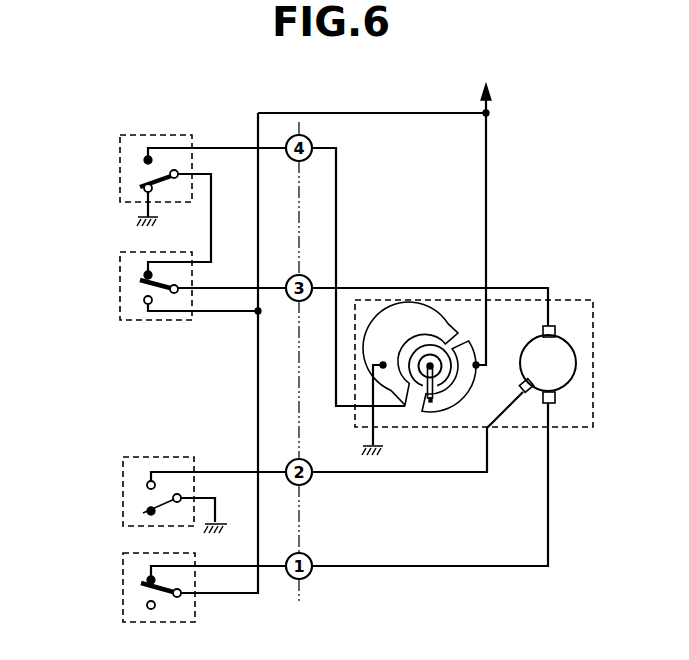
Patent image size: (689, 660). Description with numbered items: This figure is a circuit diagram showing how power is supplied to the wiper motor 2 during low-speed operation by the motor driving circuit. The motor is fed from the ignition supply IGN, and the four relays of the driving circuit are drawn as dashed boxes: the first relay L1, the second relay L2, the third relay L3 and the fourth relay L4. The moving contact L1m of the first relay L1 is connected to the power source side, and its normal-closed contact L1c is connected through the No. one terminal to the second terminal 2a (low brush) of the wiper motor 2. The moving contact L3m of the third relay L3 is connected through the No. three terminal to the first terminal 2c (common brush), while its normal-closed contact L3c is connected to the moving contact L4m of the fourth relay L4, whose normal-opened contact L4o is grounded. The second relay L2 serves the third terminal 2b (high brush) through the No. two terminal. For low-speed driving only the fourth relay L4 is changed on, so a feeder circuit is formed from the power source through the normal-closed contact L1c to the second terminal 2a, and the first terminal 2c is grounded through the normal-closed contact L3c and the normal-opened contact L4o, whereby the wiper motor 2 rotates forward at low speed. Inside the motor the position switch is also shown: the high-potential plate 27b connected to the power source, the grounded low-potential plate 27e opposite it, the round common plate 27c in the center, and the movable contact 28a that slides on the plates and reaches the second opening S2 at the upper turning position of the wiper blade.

The ignition switch terminal IGN is at (485, 86).
The fourth relay L4 is at (156, 156).
The moving contact of the fourth relay L4m is at (140, 183).
The normal-opened contact of the fourth relay L4o is at (142, 190).
The third relay L3 is at (156, 297).
The normal-closed contact of the third relay L3c is at (140, 276).
The moving contact of the third relay L3m is at (142, 299).
The second relay L2 is at (159, 479).
The first relay L1 is at (159, 575).
The normal-closed contact of the first relay L1c is at (145, 578).
The moving contact of the first relay L1m is at (145, 600).
The second opening S2 is at (416, 396).
The low-potential plate 27e is at (412, 332).
The common plate 27c is at (437, 343).
The high-potential plate 27b is at (458, 393).
The movable contact 28a is at (434, 404).
The wiper motor 2 is at (575, 360).
The second terminal 2a is at (556, 398).
The third terminal 2b is at (527, 395).
The first terminal 2c is at (555, 332).